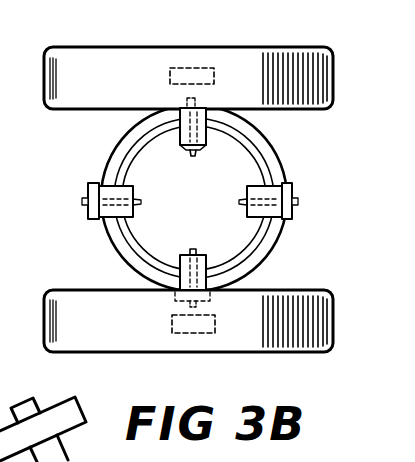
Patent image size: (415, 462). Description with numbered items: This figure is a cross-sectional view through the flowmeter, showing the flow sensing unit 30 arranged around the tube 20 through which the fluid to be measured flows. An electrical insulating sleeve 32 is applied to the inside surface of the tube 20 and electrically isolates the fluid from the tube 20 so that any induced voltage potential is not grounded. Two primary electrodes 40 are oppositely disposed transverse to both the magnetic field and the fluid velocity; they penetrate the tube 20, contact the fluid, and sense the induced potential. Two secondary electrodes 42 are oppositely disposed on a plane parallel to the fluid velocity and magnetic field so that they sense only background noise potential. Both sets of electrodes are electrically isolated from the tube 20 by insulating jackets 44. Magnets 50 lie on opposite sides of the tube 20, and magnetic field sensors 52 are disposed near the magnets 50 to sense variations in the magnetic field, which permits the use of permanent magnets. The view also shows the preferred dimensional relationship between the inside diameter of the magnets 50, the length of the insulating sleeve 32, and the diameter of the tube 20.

The tube 20 is at (254, 264).
The flow sensing unit 30 is at (173, 199).
The electrical insulating sleeve 32 is at (236, 243).
The primary electrodes 40 is at (239, 203).
The secondary electrodes 42 is at (191, 153).
The insulating jackets 44 is at (182, 108).
The magnets 50 is at (150, 58).
The magnetic field sensors 52 is at (190, 70).